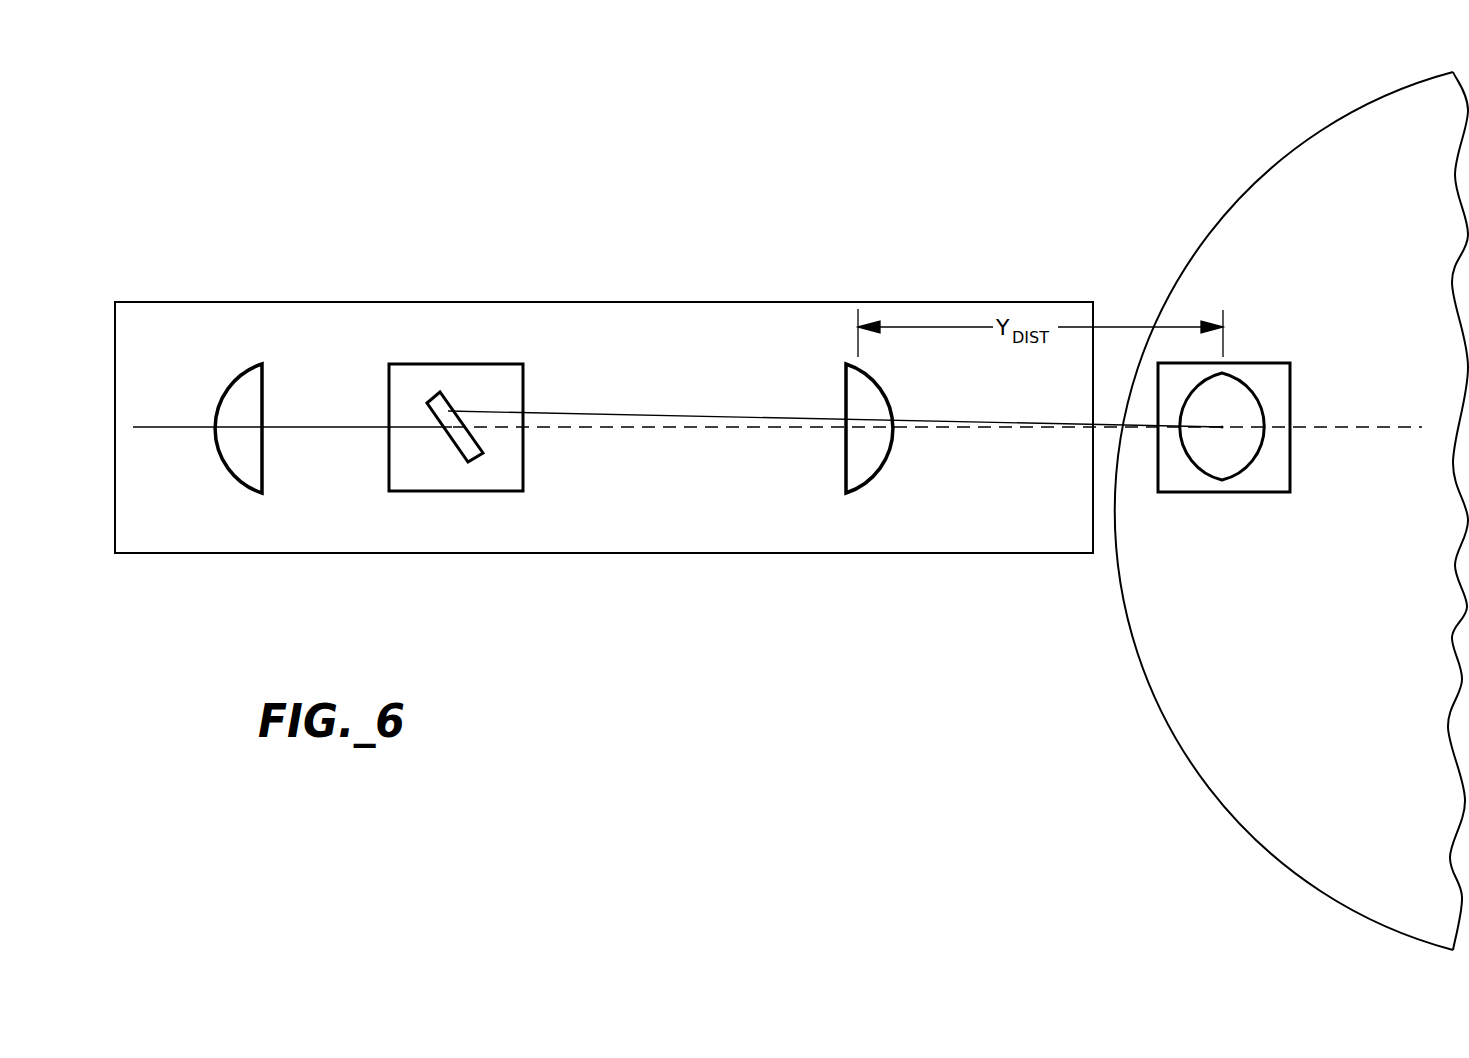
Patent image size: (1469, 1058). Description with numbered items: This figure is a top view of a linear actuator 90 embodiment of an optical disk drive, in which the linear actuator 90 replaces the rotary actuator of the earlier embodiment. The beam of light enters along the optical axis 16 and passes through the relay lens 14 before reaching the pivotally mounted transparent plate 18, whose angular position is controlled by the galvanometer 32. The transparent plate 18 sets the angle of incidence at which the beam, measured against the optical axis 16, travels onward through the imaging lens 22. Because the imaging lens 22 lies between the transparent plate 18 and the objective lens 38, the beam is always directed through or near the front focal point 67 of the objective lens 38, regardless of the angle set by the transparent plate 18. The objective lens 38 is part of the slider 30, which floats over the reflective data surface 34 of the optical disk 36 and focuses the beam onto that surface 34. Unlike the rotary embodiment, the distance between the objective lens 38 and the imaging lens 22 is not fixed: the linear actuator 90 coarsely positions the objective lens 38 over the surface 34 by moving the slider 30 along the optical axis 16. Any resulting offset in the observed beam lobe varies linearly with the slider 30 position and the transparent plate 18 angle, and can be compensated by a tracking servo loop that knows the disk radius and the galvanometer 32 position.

The relay lens 14 is at (243, 487).
The optical axis 16 is at (625, 428).
The transparent plate 18 is at (478, 456).
The imaging lens 22 is at (860, 487).
The slider 30 is at (1195, 492).
The galvanometer 32 is at (440, 494).
The reflective data surface 34 is at (1351, 272).
The optical disk 36 is at (1213, 237).
The objective lens 38 is at (1260, 447).
The front focal point 67 is at (1223, 425).
The linear actuator 90 is at (968, 553).